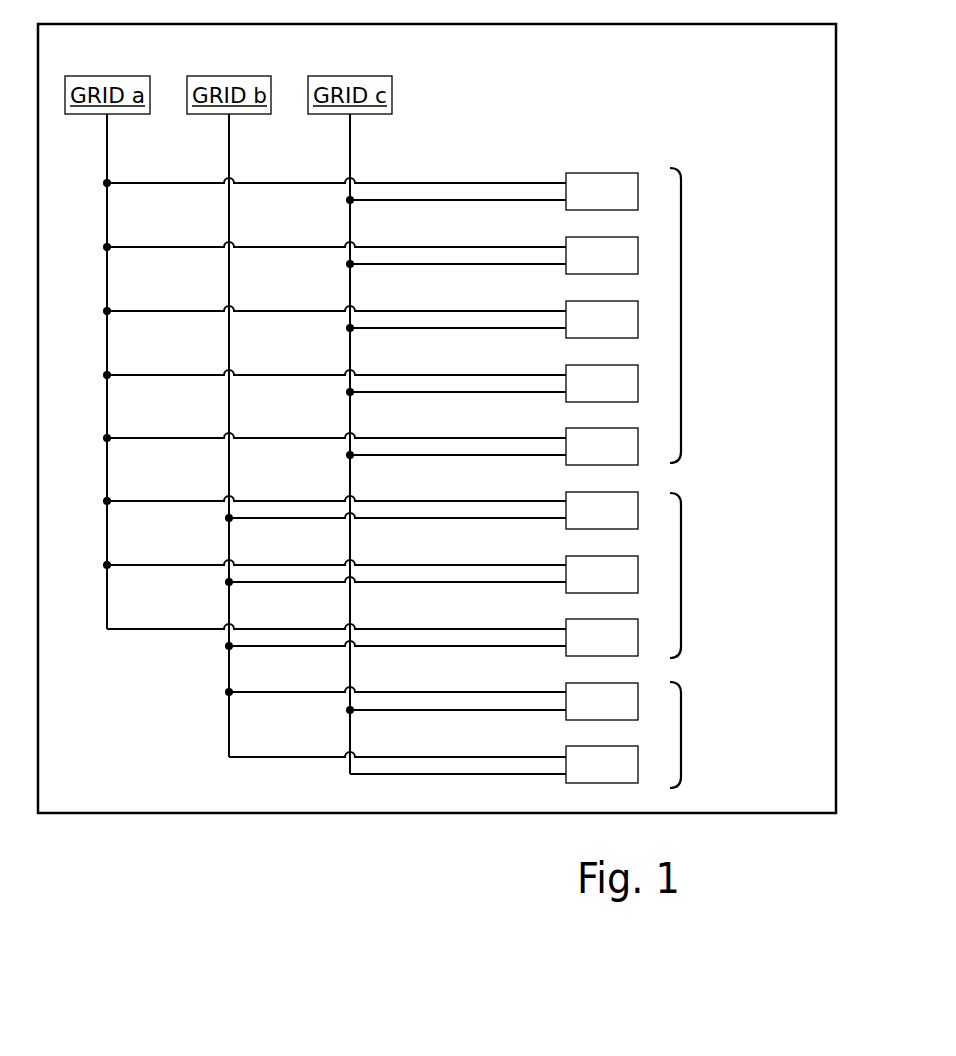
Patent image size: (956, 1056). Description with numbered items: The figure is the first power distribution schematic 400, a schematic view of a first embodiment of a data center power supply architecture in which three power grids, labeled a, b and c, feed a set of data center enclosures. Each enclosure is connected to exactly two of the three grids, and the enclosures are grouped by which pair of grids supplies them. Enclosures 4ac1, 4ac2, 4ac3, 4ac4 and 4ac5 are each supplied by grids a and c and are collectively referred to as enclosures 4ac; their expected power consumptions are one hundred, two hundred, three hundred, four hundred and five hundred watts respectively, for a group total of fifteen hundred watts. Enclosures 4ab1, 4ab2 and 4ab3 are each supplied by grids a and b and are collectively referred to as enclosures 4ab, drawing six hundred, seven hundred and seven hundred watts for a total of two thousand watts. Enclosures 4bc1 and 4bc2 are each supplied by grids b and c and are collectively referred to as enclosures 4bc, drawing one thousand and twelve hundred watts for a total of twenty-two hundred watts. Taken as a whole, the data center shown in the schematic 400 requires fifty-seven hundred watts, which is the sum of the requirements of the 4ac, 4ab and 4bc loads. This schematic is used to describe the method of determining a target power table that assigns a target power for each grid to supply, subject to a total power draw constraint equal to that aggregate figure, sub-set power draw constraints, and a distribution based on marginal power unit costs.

The first power distribution schematic 400 is at (828, 57).
The enclosure 4ac1 is at (627, 203).
The enclosure 4ac2 is at (627, 267).
The enclosure 4ac3 is at (627, 331).
The enclosure 4ac4 is at (627, 395).
The enclosure 4ac5 is at (627, 458).
The enclosure 4ab1 is at (627, 522).
The enclosure 4ab2 is at (627, 586).
The enclosure 4ab3 is at (627, 649).
The enclosure 4bc1 is at (627, 713).
The enclosure 4bc2 is at (627, 776).
The enclosures 4ac is at (681, 317).
The enclosures 4ab is at (681, 577).
The enclosures 4bc is at (681, 736).